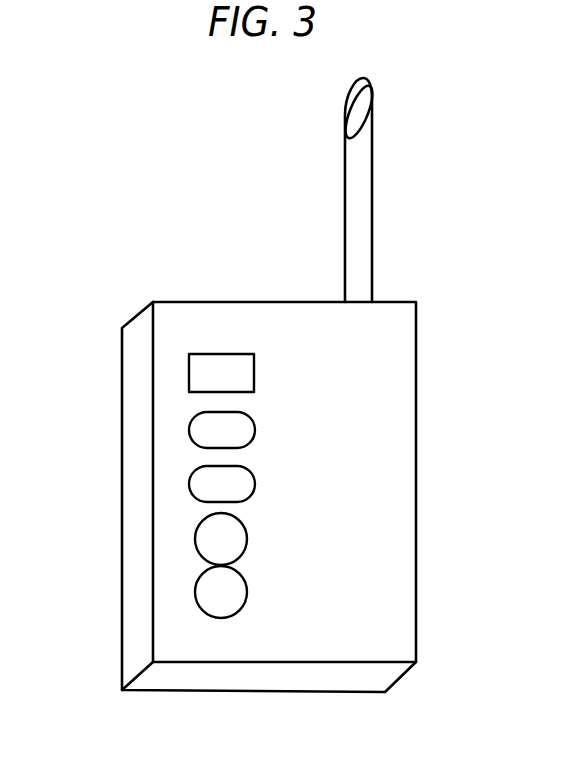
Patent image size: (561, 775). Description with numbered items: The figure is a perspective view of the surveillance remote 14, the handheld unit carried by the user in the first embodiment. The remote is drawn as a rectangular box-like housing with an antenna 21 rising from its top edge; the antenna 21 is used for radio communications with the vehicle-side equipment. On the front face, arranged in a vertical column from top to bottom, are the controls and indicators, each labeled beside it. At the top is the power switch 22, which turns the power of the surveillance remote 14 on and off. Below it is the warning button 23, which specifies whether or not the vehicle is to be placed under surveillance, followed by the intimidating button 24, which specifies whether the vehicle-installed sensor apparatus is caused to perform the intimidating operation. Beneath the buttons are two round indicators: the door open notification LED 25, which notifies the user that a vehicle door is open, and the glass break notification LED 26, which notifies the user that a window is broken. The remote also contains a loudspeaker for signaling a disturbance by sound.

The surveillance remote 14 is at (210, 312).
The antenna 21 is at (352, 208).
The power switch 22 is at (190, 369).
The warning button 23 is at (189, 428).
The intimidating button 24 is at (189, 482).
The door open notification LED 25 is at (195, 531).
The glass break notification LED 26 is at (196, 591).